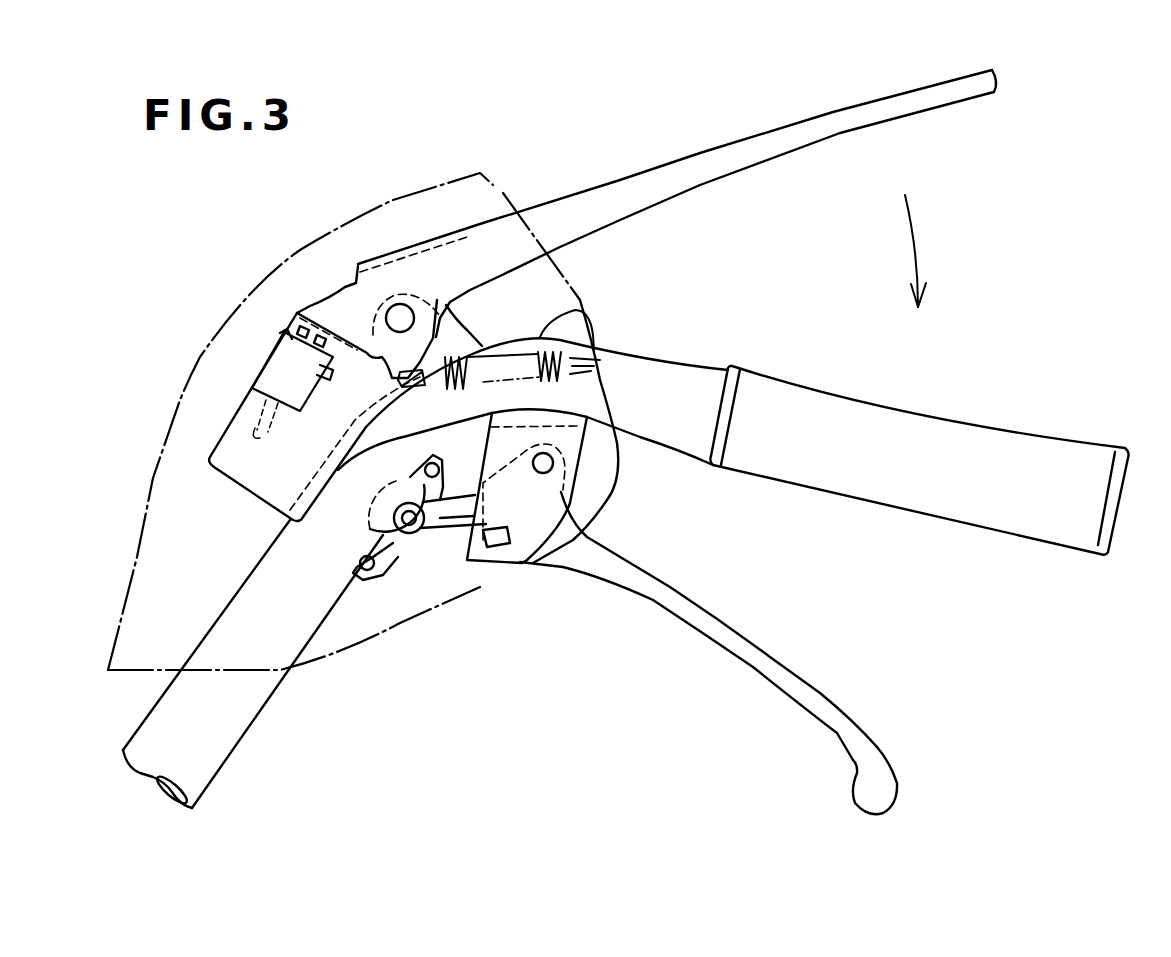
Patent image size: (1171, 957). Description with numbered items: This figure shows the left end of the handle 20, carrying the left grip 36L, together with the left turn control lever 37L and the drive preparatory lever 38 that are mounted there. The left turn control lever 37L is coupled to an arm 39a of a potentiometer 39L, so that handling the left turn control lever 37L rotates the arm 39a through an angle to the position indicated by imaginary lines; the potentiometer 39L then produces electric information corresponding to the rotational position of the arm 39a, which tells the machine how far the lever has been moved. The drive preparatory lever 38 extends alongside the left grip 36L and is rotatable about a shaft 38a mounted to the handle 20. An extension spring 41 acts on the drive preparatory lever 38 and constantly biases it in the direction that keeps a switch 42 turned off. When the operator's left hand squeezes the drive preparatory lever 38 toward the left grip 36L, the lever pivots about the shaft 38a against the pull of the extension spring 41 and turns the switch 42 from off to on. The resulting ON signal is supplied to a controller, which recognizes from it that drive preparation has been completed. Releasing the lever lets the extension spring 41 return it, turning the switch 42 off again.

The handle 20 is at (215, 737).
The left grip 36L is at (972, 440).
The left turn control lever 37L is at (777, 680).
The drive preparatory lever 38 is at (833, 121).
The shaft 38a is at (400, 317).
The potentiometer 39L is at (416, 553).
The arm 39a is at (527, 563).
The extension spring 41 is at (580, 309).
The switch 42 is at (293, 375).